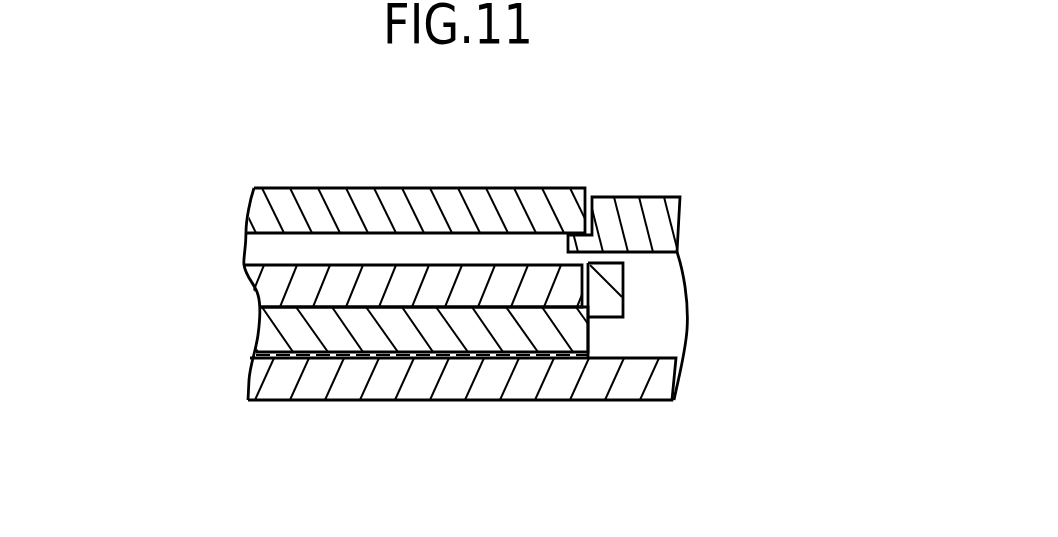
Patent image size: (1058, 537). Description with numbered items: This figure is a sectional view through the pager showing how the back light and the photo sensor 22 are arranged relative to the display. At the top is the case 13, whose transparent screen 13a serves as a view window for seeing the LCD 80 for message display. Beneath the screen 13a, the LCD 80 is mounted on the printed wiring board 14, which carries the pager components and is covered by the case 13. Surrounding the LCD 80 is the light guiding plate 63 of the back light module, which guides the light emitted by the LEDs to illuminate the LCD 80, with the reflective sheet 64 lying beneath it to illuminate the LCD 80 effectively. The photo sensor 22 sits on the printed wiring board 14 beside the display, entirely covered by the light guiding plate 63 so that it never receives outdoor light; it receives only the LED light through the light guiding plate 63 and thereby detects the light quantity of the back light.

The screen 13a is at (365, 188).
The case 13 is at (653, 197).
The LCD 80 is at (277, 280).
The light guiding plate 63 is at (272, 332).
The reflective sheet 64 is at (258, 354).
The photo sensor 22 is at (620, 338).
The printed wiring board (PWB) 14 is at (650, 387).